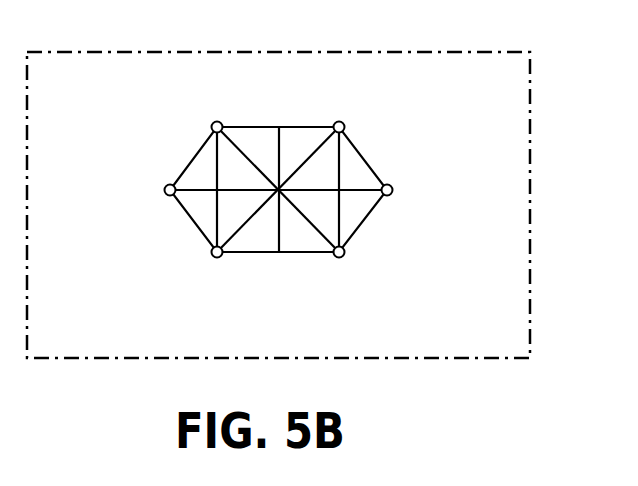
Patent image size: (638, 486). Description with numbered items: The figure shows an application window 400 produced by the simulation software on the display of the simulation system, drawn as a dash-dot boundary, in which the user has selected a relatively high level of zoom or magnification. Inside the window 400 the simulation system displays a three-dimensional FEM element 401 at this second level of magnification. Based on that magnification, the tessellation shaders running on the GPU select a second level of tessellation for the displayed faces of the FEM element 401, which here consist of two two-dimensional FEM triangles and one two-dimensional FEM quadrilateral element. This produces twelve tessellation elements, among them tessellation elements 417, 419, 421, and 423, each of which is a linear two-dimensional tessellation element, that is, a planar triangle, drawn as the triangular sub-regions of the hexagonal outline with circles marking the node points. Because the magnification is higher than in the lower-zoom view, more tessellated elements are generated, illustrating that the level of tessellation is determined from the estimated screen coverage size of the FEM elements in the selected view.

The application window 400 is at (258, 52).
The 3D FEM element 401 is at (362, 159).
The tessellation element 417 is at (358, 210).
The tessellation element 419 is at (313, 242).
The tessellation element 421 is at (255, 235).
The tessellation element 423 is at (202, 213).